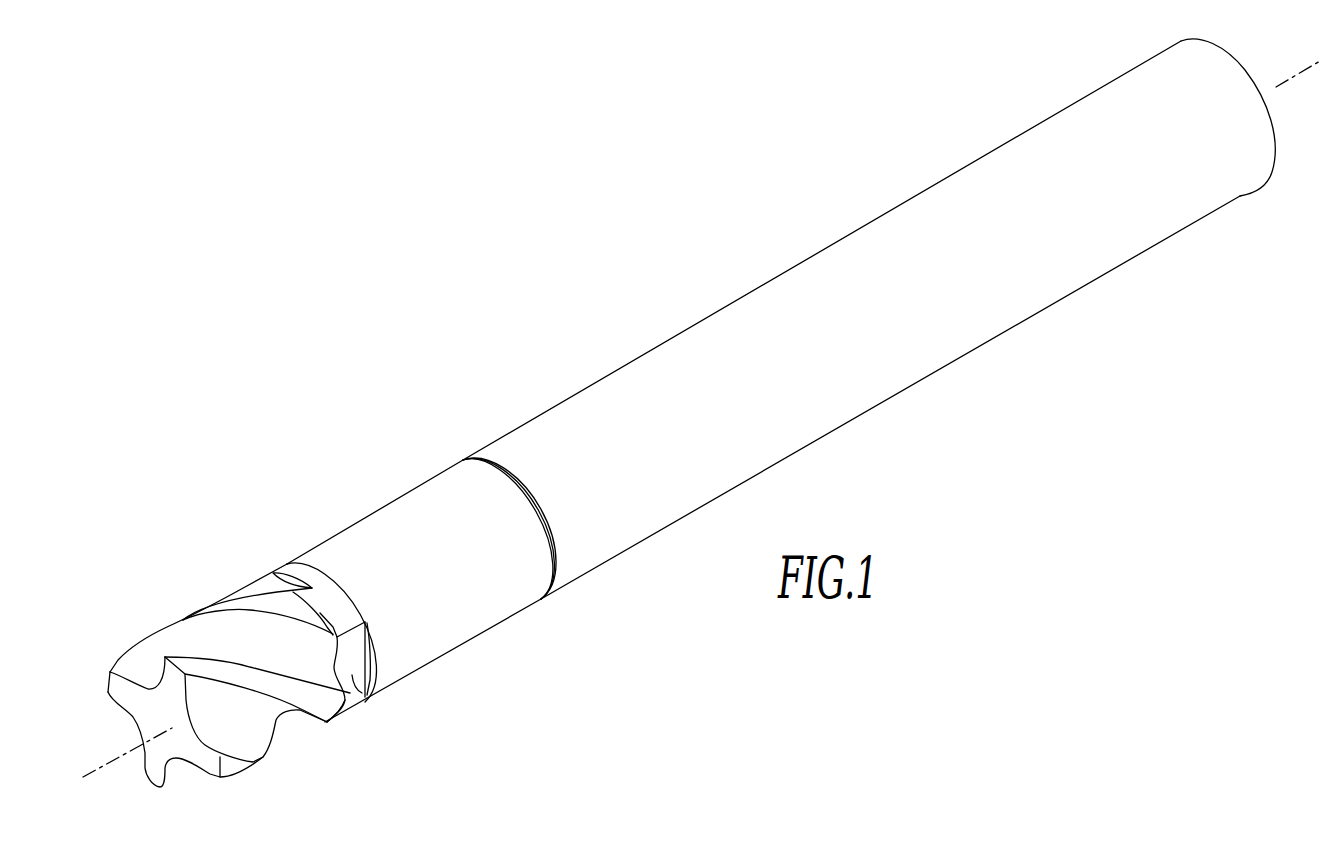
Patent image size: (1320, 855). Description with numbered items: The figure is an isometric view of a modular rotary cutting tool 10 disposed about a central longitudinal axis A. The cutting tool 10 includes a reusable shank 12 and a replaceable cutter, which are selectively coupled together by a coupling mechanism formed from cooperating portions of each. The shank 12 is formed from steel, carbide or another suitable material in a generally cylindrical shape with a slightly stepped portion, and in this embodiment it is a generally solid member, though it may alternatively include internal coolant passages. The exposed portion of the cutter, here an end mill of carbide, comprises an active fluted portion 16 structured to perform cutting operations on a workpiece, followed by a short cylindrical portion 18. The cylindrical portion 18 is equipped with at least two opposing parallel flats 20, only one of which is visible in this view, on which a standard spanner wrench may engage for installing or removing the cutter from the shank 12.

The modular rotary cutting tool 10 is at (592, 274).
The reusable shank 12 is at (840, 237).
The short cylindrical portion 18 is at (368, 547).
The active fluted portion 16 is at (197, 638).
The parallel flats 20 is at (358, 700).
The central longitudinal axis A is at (120, 755).